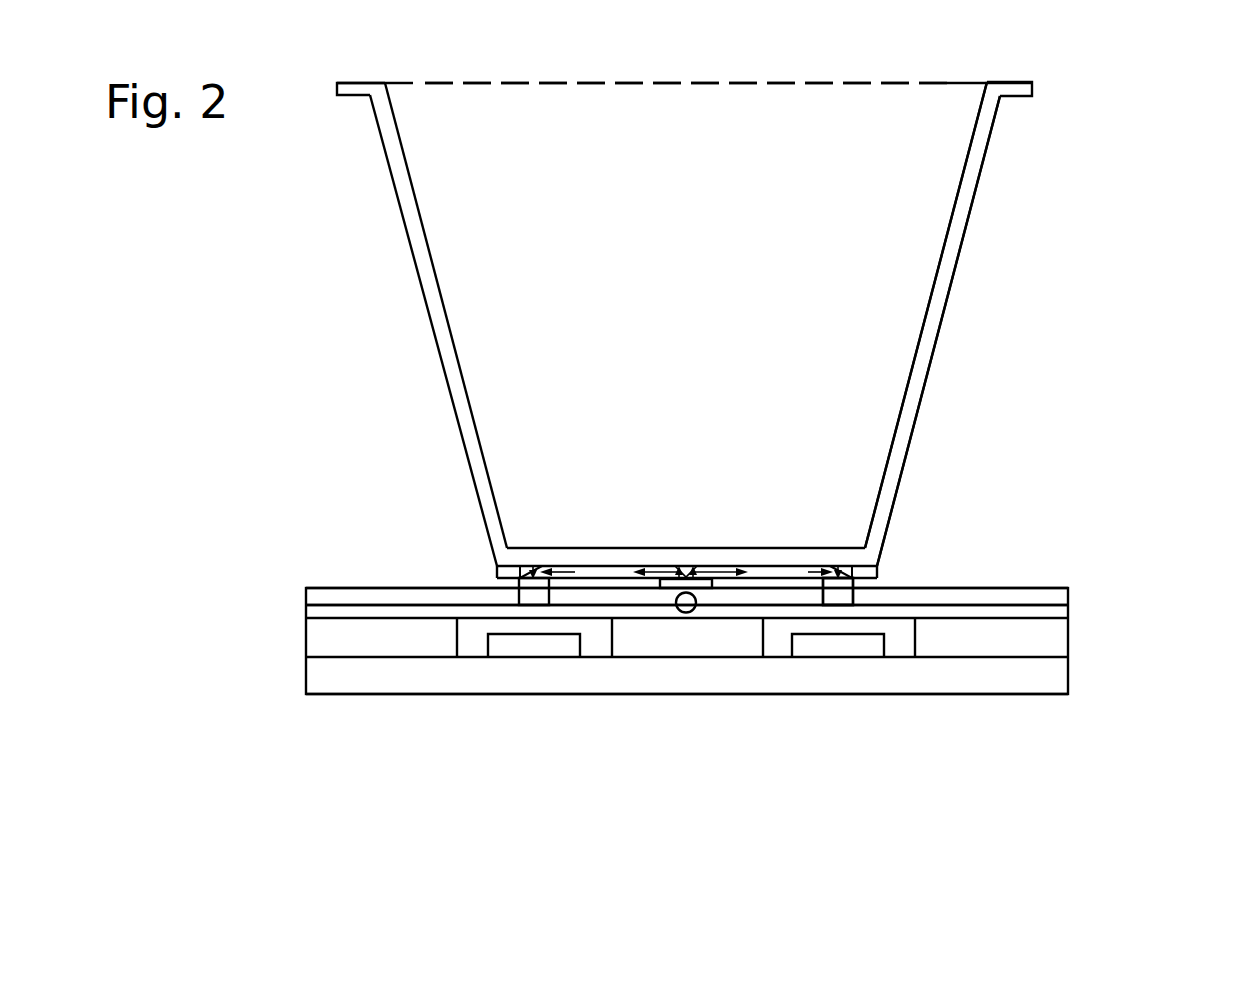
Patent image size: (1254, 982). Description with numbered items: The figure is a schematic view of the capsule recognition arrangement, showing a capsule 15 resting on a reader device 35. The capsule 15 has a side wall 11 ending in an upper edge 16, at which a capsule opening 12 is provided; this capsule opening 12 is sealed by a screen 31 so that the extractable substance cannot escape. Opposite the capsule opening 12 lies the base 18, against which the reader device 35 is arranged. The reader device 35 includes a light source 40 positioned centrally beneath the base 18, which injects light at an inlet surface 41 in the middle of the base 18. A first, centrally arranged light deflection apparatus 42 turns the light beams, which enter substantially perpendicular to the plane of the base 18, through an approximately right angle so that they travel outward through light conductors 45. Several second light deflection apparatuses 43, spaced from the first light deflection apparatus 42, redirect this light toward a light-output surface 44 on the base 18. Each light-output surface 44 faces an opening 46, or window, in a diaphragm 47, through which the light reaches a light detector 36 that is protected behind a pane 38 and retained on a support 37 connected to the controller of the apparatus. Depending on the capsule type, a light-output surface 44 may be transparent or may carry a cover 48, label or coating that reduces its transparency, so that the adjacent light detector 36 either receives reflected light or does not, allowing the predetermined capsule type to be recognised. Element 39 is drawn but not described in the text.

The side wall 11 is at (415, 256).
The capsule opening 12 is at (598, 82).
The capsule 15 is at (945, 217).
The upper edge 16 is at (1015, 90).
The base 18 is at (470, 566).
The screen 31 is at (830, 78).
The reader device 35 is at (1100, 639).
The light detector 36 is at (506, 653).
The support 37 is at (1007, 682).
The pane 38 is at (1040, 612).
The partition wall 39 is at (897, 635).
The light source 40 is at (678, 612).
The inlet surface 41 is at (702, 588).
The first light deflection apparatus 42 is at (682, 566).
The second light deflection apparatus 43 is at (532, 577).
The light-output surface 44 is at (520, 582).
The light conductor 45 is at (727, 546).
The opening 46 is at (847, 598).
The diaphragm 47 is at (1015, 587).
The cover 48 is at (827, 600).